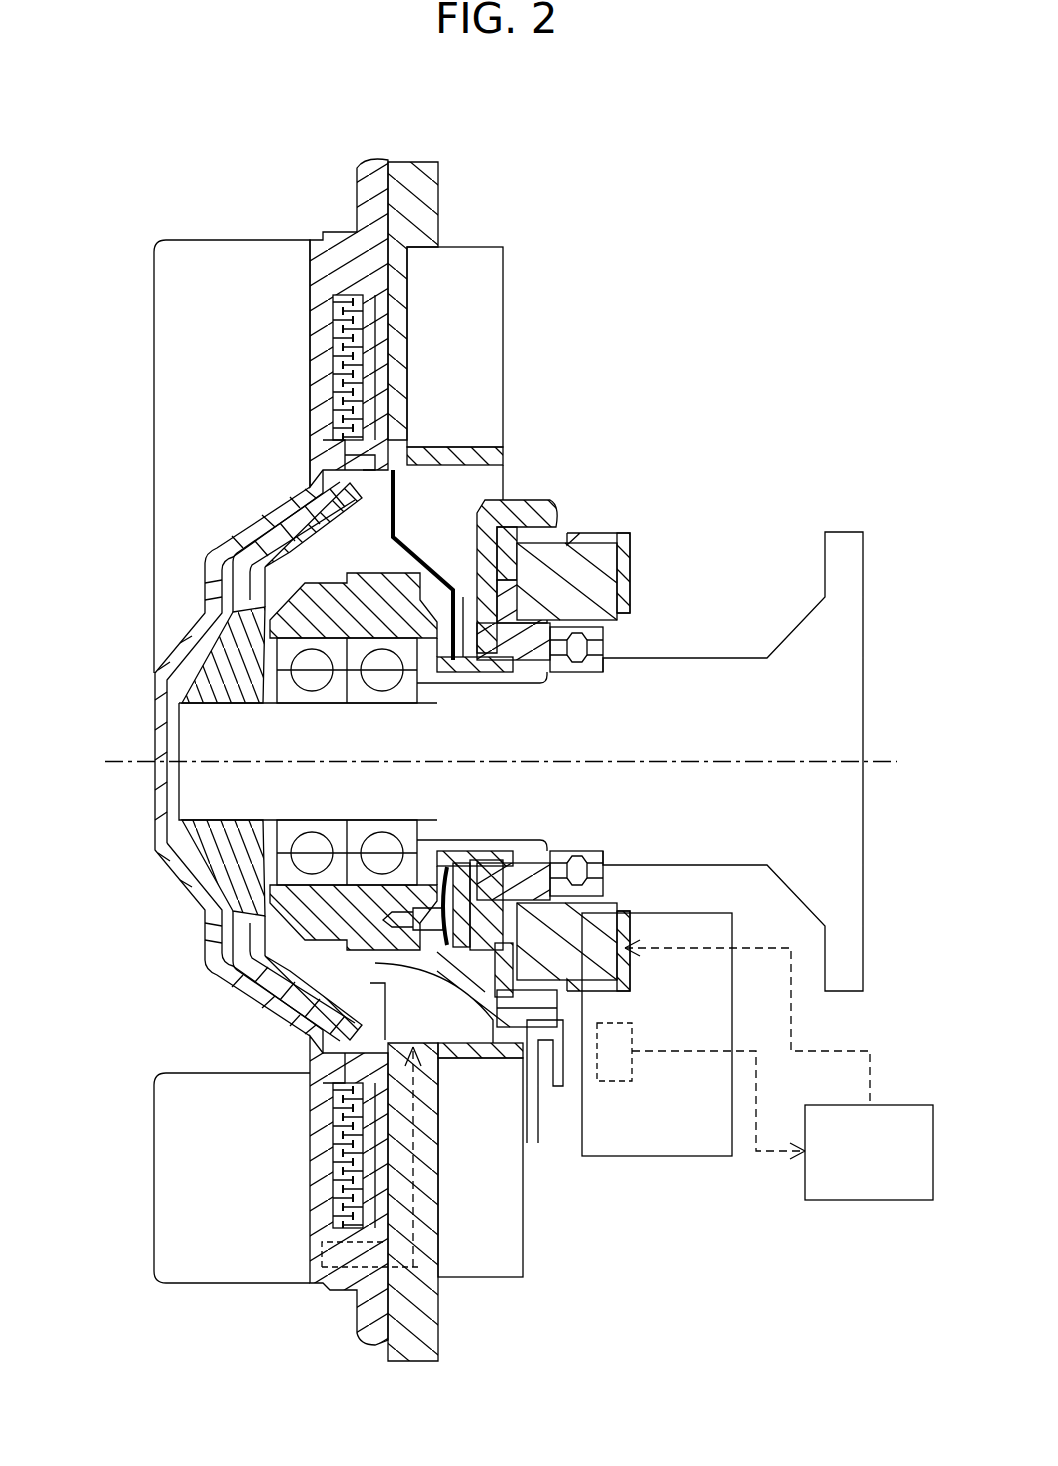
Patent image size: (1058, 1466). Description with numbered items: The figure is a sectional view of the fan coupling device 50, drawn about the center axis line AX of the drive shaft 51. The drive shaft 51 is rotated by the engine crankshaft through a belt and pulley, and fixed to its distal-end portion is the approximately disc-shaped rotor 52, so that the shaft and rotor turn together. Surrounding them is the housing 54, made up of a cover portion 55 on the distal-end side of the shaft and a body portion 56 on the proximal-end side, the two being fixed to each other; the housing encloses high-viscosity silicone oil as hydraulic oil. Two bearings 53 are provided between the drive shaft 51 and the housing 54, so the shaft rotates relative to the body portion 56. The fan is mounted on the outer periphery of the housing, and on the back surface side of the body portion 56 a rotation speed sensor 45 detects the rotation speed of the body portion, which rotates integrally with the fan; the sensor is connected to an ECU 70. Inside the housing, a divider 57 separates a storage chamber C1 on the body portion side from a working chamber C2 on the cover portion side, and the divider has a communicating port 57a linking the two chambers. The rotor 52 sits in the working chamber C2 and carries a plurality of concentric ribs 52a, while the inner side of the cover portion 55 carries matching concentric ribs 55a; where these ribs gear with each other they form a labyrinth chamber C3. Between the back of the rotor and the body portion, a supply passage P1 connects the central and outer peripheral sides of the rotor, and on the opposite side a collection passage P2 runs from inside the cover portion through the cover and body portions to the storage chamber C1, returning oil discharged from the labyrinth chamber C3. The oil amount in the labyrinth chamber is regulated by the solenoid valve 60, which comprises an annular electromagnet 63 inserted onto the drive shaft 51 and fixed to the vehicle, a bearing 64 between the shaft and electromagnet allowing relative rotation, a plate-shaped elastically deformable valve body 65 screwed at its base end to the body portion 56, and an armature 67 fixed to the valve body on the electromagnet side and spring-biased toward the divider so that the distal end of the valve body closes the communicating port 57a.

The fan coupling device 50 is at (626, 351).
The drive shaft 51 is at (720, 658).
The rotor 52 is at (230, 545).
The ribs 52a is at (345, 312).
The bearings 53 is at (275, 648).
The housing 54 is at (272, 112).
The cover portion 55 is at (357, 168).
The ribs 55a is at (345, 332).
The body portion 56 is at (403, 160).
The divider 57 is at (350, 522).
The communicating port 57a is at (395, 448).
The solenoid valve 60 is at (704, 509).
The electromagnet 63 is at (617, 558).
The bearing 64 is at (597, 630).
The valve body 65 is at (413, 552).
The armature 67 is at (453, 637).
The ECU 70 is at (905, 1105).
The rotation speed sensor 45 is at (604, 1081).
The supply passage P1 is at (390, 297).
The collection passage P2 is at (420, 1267).
The storage chamber C1 is at (442, 487).
The working chamber C2 is at (320, 497).
The labyrinth chamber C3 is at (92, 288).
The center axis line AX is at (523, 763).